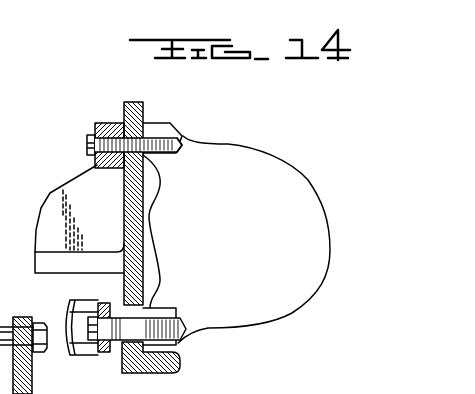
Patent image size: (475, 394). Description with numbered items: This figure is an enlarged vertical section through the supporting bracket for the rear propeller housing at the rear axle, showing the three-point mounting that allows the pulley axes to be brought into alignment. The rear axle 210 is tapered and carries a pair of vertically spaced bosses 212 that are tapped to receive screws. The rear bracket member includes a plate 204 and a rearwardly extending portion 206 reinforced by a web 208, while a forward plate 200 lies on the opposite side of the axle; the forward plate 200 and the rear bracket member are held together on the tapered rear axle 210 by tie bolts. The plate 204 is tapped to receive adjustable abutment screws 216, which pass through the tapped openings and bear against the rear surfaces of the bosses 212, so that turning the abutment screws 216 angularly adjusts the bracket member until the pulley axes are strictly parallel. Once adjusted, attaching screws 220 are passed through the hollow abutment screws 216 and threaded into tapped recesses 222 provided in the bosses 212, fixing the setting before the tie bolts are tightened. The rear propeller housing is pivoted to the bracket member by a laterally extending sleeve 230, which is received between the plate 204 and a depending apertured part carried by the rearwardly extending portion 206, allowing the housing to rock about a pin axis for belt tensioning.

The forward plate 200 is at (70, 392).
The plate 204 is at (141, 238).
The rearwardly extending portion 206 is at (90, 260).
The web 208 is at (71, 192).
The rear axle 210 is at (288, 312).
The bosses 212 is at (165, 127).
The adjustable abutment screws 216 is at (119, 123).
The attaching screws 220 is at (87, 147).
The tapped recesses 222 is at (183, 137).
The sleeve 230 is at (87, 345).